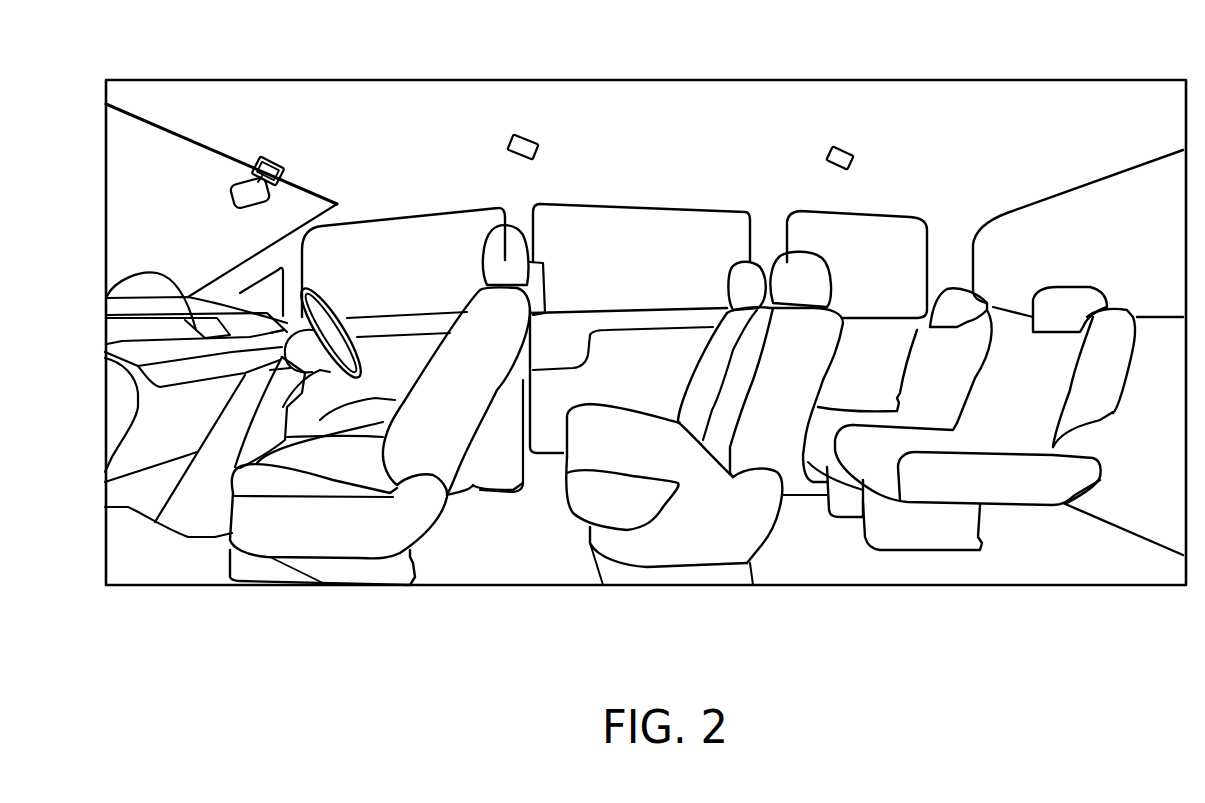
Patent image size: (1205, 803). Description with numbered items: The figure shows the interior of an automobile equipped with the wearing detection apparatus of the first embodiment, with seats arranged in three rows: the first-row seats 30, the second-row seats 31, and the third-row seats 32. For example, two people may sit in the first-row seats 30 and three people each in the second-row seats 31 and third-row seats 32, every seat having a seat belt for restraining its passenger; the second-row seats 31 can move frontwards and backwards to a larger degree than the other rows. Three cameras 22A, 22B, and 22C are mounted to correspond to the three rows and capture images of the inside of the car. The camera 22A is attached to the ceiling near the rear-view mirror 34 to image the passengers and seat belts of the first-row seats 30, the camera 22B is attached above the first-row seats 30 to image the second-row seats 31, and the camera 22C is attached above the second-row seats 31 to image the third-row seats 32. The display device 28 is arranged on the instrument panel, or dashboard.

The camera 22A is at (270, 165).
The camera 22B is at (533, 133).
The camera 22C is at (847, 145).
The rear-view mirror 34 is at (243, 200).
The display device 28 is at (150, 272).
The first-row seats 30 is at (288, 533).
The second-row seats 31 is at (657, 550).
The third-row seats 32 is at (927, 523).